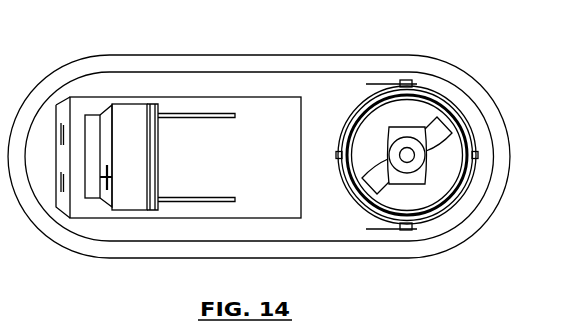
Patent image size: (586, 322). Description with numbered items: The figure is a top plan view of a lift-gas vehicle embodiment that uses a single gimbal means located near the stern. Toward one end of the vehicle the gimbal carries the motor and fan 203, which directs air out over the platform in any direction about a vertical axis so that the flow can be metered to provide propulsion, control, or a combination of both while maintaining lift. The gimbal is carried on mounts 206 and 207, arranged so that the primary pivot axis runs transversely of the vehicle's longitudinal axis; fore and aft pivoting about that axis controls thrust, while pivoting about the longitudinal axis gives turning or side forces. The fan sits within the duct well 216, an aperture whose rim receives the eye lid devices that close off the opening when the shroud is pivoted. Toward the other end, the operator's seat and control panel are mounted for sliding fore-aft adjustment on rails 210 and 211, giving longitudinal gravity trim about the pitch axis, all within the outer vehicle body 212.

The fan 203 is at (440, 121).
The mount 206 is at (412, 80).
The mount 207 is at (412, 231).
The rail 210 is at (208, 118).
The rail 211 is at (202, 198).
The housing 212 is at (486, 142).
The duct well 216 is at (362, 118).